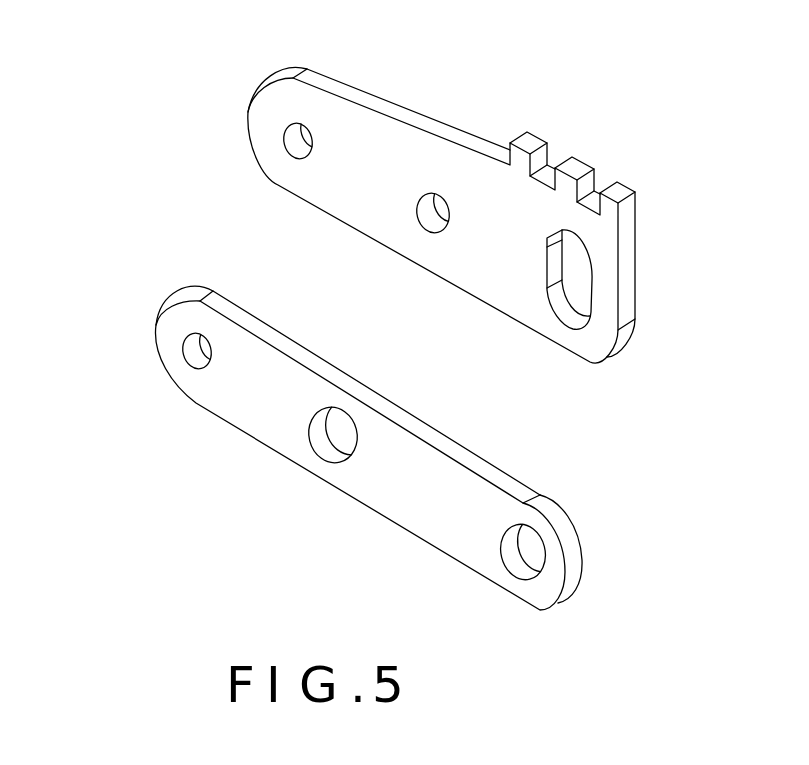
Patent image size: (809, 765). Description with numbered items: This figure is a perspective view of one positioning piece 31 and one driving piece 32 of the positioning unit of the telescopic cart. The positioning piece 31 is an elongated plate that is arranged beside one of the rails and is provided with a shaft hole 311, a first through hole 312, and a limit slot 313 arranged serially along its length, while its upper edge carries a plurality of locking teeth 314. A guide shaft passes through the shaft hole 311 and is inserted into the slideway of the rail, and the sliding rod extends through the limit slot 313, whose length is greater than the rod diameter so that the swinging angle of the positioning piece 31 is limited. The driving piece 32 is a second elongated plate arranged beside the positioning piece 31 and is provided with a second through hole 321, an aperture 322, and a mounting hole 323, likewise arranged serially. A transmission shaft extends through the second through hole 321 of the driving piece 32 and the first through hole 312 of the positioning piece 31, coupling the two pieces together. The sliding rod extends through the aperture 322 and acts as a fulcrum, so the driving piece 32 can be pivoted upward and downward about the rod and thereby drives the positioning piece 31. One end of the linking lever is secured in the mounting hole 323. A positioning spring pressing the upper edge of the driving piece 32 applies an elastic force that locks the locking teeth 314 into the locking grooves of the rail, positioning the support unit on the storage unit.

The positioning piece 31 is at (607, 248).
The shaft hole 311 is at (290, 137).
The first through hole 312 is at (433, 210).
The limit slot 313 is at (580, 283).
The locking tooth 314 is at (570, 176).
The driving piece 32 is at (483, 502).
The second through hole 321 is at (192, 349).
The aperture 322 is at (337, 430).
The mounting hole 323 is at (532, 552).